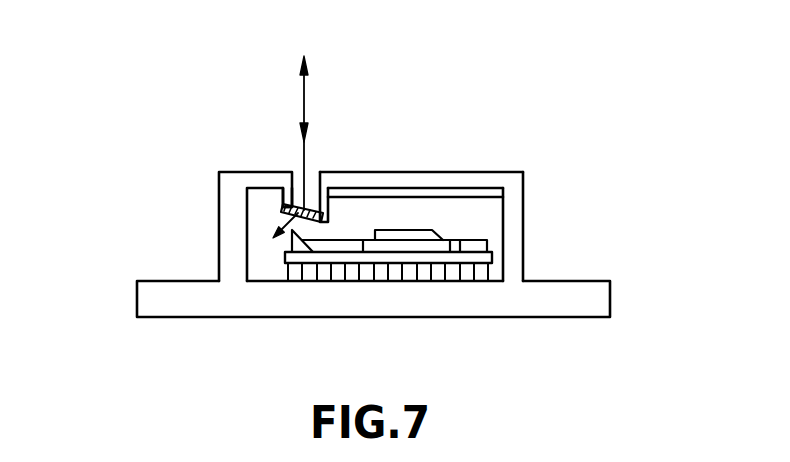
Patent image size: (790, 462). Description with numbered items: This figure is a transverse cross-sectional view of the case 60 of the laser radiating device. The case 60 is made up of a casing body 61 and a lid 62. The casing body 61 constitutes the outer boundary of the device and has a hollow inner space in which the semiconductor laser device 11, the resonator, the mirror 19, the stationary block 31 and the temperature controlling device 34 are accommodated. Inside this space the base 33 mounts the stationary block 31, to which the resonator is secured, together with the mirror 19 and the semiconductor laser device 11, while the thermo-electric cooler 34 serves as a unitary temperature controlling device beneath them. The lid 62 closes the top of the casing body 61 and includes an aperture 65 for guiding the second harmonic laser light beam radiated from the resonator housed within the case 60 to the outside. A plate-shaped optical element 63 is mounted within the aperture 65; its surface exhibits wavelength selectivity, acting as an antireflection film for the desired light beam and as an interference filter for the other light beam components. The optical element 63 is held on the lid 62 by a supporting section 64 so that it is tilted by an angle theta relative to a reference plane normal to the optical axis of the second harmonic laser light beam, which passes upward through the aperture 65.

The semiconductor laser device 11 is at (463, 237).
The mirror 19 is at (292, 244).
The stationary block 31 is at (398, 244).
The base 33 is at (492, 258).
The thermo-electric cooler 34 is at (473, 275).
The case 60 is at (418, 137).
The casing body 61 is at (227, 226).
The lid 62 is at (507, 178).
The optical element 63 is at (329, 219).
The supporting section 64 is at (297, 187).
The aperture 65 is at (299, 184).